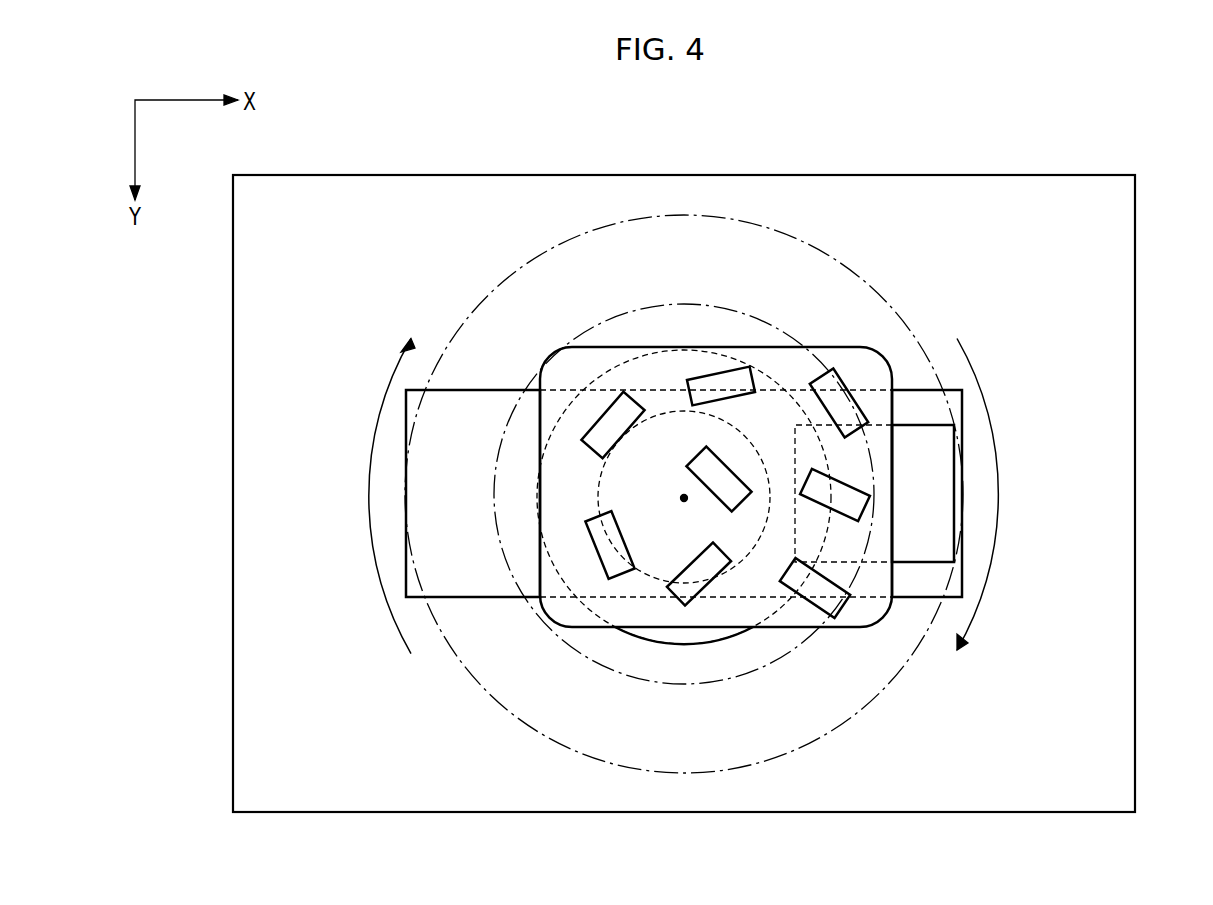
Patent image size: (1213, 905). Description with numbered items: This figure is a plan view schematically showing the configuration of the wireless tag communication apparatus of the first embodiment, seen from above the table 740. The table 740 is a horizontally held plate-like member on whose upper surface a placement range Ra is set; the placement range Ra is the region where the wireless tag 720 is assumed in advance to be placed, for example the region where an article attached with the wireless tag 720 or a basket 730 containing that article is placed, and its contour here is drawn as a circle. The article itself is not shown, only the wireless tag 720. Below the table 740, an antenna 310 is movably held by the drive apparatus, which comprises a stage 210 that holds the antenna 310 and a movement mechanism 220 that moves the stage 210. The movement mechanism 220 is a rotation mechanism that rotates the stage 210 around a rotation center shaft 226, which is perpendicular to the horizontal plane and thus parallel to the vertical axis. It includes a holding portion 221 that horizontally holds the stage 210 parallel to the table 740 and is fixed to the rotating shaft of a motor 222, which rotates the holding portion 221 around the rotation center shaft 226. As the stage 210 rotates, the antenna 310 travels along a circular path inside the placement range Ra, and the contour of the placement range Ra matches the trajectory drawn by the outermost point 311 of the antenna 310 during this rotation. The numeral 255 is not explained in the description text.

The table 740 is at (1135, 270).
The placement range Ra is at (845, 252).
The imaginary circle 255 is at (620, 313).
The antenna 310 is at (913, 438).
The outermost point 311 is at (958, 417).
The stage 210 is at (917, 587).
The movement mechanism 220 is at (684, 556).
The holding portion 221 is at (655, 575).
The motor 222 is at (685, 640).
The rotation center shaft 226 is at (682, 498).
The wireless tag 720 is at (705, 373).
The basket 730 is at (837, 370).